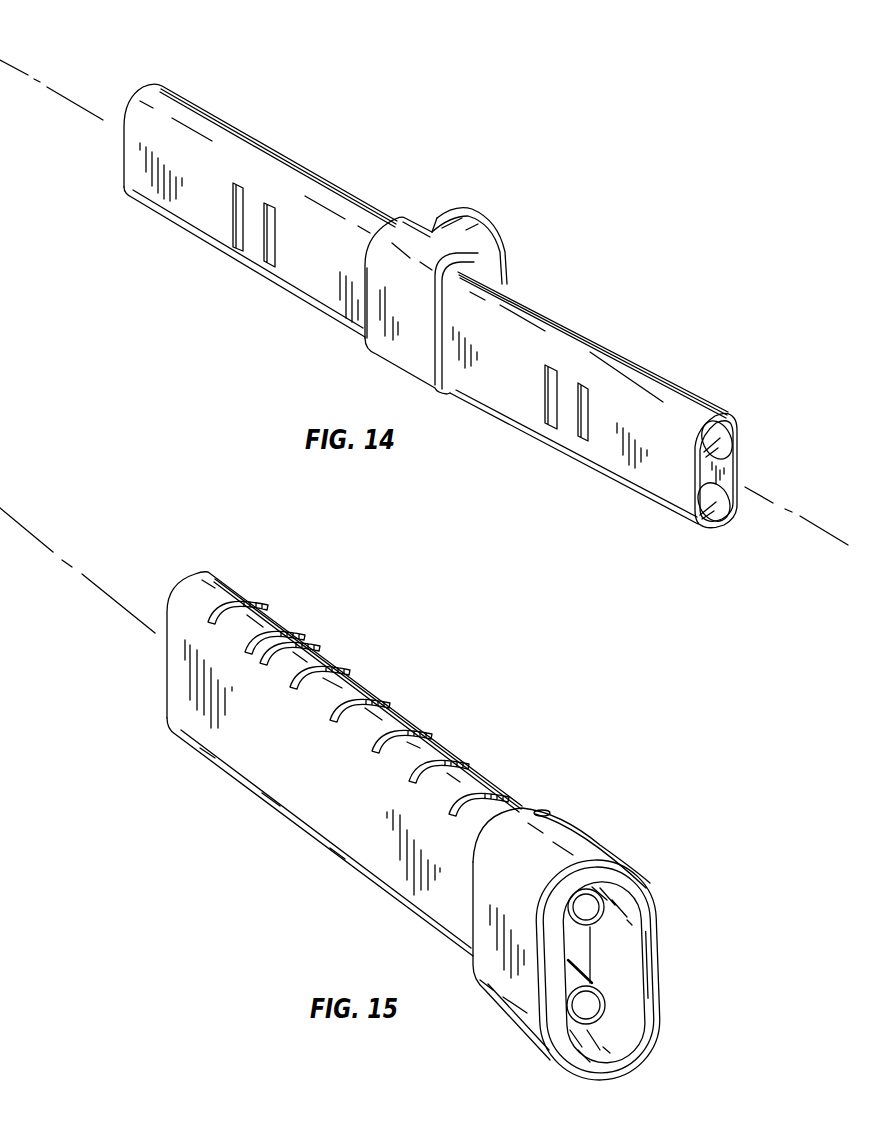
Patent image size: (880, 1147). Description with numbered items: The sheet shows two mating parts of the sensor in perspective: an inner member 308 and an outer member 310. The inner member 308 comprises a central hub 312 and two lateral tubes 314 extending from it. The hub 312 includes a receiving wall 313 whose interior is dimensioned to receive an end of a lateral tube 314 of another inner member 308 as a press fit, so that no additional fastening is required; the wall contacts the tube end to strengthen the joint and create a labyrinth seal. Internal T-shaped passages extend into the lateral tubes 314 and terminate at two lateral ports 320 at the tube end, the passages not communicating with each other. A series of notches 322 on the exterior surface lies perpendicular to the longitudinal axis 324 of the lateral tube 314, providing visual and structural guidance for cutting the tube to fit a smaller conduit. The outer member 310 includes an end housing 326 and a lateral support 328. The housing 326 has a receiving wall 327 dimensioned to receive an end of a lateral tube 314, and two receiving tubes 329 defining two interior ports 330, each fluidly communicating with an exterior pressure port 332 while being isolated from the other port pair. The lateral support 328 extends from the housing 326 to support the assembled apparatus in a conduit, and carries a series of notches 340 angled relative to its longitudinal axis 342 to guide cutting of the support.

In FIG. 14, the inner member 308 is at (465, 148).
In FIG. 14, the central hub 312 is at (383, 354).
In FIG. 14, the receiving wall 313 is at (500, 236).
In FIG. 14, the lateral tube 314 is at (600, 340).
In FIG. 14, the lateral port 320 is at (721, 434).
In FIG. 14, the notches 322 is at (270, 246).
In FIG. 14, the longitudinal axis 324 is at (820, 534).
In FIG. 15, the outer member 310 is at (448, 667).
In FIG. 15, the end housing 326 is at (588, 837).
In FIG. 15, the receiving wall 327 is at (652, 951).
In FIG. 15, the lateral support 328 is at (303, 806).
In FIG. 15, the receiving tubes 329 is at (596, 921).
In FIG. 15, the interior port 330 is at (590, 906).
In FIG. 15, the pressure port 332 is at (540, 810).
In FIG. 15, the notches 340 is at (437, 760).
In FIG. 15, the longitudinal axis 342 is at (42, 541).